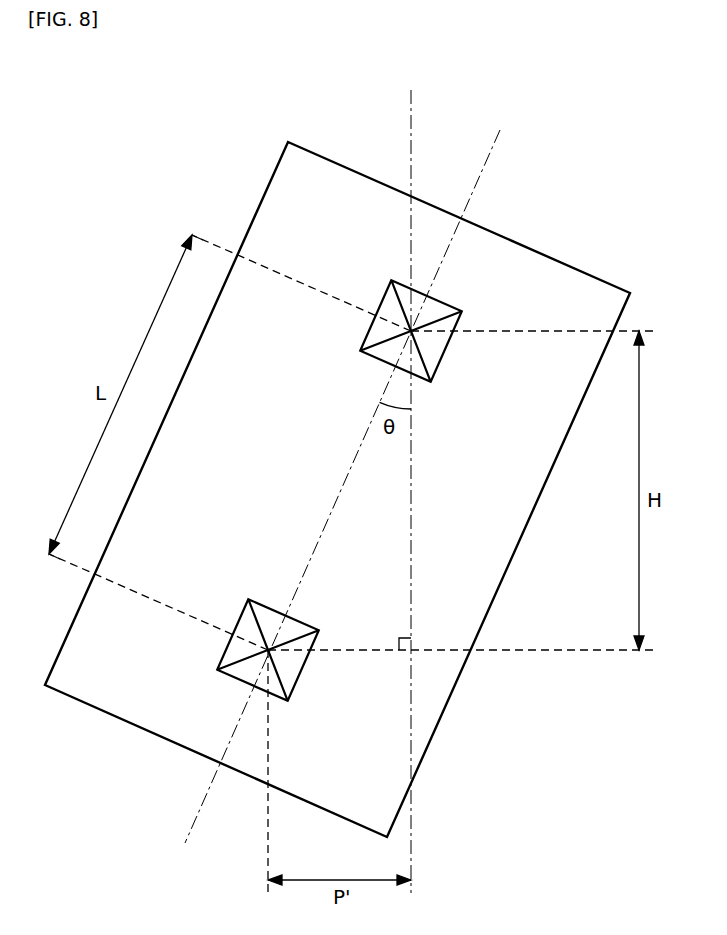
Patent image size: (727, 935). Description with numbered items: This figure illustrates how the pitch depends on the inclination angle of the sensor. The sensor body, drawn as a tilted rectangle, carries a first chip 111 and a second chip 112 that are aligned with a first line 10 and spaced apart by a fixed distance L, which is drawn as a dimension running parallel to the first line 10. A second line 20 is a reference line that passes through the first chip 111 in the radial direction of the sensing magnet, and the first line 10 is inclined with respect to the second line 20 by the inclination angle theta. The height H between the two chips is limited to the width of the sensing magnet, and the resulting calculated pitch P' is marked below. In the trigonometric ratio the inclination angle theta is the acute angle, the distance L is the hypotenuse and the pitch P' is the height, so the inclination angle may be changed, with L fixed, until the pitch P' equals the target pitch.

The second line 20 is at (411, 96).
The first line 10 is at (496, 145).
The first chip 111 is at (461, 310).
The second chip 112 is at (218, 669).